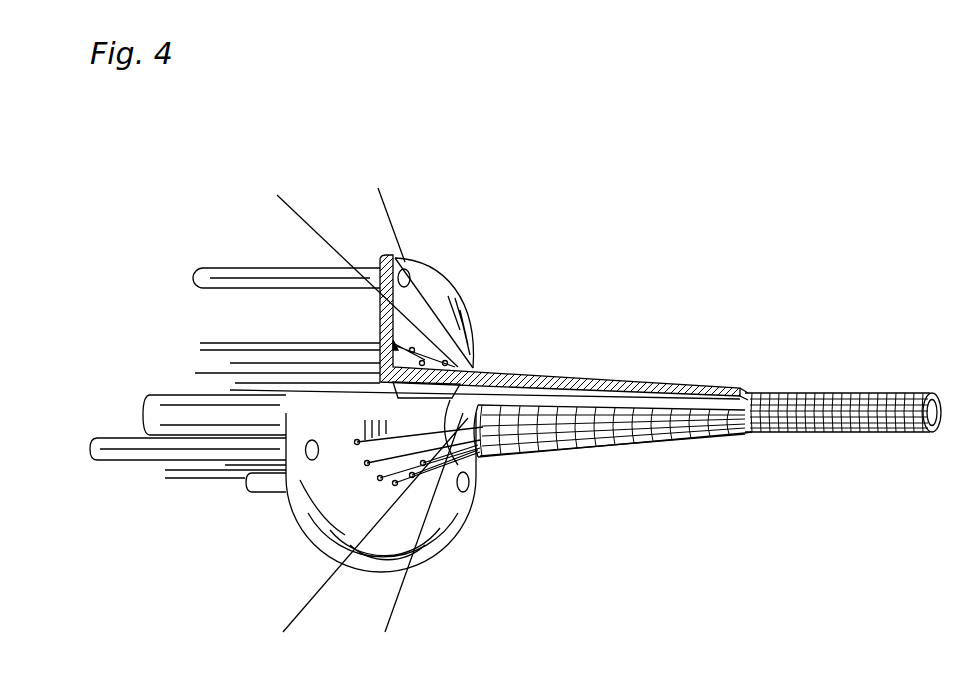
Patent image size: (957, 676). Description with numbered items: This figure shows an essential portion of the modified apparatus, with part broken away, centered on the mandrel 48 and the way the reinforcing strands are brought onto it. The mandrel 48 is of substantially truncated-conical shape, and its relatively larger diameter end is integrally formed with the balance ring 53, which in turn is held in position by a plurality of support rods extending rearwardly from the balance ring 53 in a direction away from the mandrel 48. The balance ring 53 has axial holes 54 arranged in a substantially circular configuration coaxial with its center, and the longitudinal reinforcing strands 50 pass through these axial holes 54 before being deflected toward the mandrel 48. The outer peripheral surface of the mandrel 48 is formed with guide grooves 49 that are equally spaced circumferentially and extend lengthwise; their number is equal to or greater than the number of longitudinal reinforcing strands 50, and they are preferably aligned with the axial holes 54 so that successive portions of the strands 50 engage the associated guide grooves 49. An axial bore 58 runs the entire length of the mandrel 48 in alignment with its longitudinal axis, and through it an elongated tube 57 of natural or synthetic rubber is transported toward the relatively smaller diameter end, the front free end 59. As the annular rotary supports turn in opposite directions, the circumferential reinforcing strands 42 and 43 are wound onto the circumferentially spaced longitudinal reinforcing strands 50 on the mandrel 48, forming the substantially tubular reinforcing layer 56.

The circumferential reinforcing strand 42 is at (313, 229).
The circumferential reinforcing strand 43 is at (397, 236).
The mandrel 48 is at (612, 382).
The guide grooves 49 is at (475, 370).
The longitudinal reinforcing strands 50 is at (240, 338).
The balance ring 53 is at (465, 299).
The axial holes 54 is at (380, 420).
The reinforcing layer 56 is at (618, 442).
The elongated tube 57 is at (692, 402).
The axial bore 58 is at (530, 391).
The front free end 59 is at (743, 433).